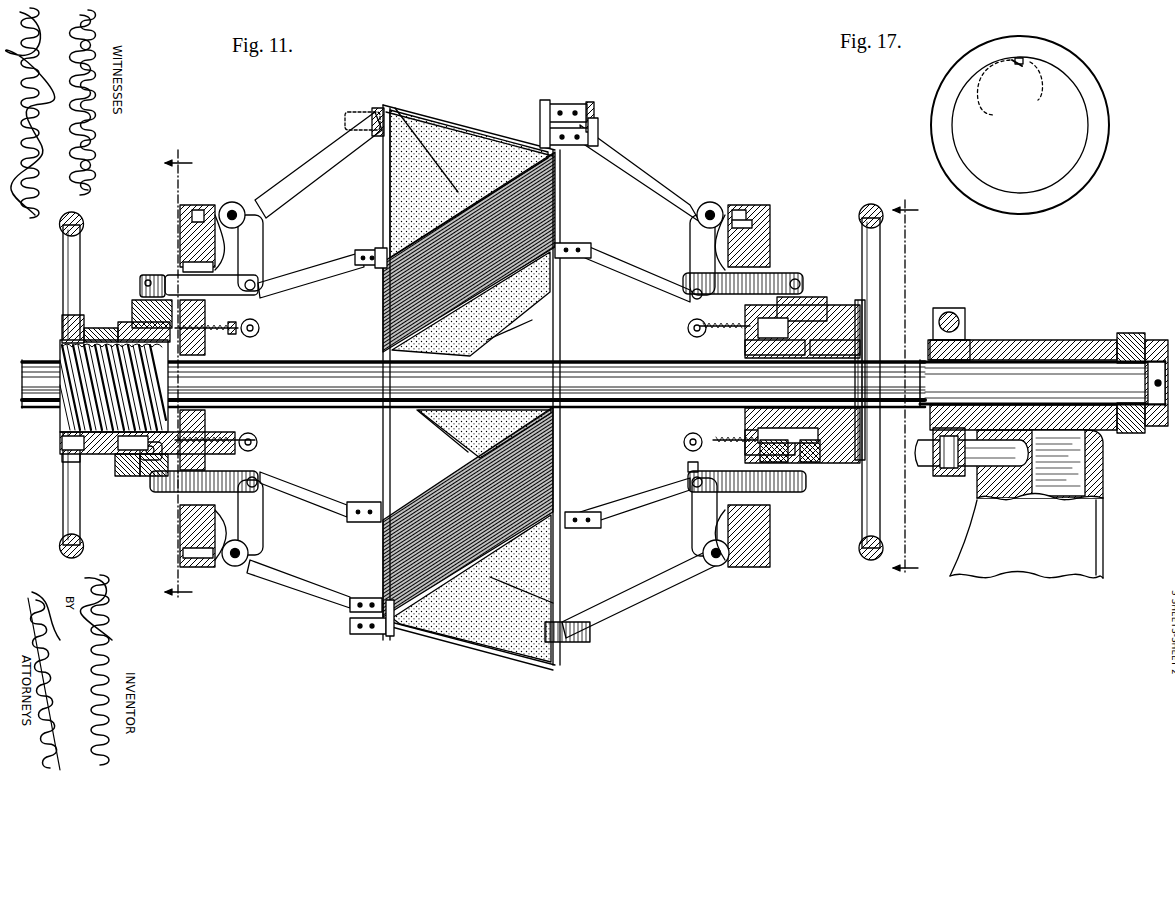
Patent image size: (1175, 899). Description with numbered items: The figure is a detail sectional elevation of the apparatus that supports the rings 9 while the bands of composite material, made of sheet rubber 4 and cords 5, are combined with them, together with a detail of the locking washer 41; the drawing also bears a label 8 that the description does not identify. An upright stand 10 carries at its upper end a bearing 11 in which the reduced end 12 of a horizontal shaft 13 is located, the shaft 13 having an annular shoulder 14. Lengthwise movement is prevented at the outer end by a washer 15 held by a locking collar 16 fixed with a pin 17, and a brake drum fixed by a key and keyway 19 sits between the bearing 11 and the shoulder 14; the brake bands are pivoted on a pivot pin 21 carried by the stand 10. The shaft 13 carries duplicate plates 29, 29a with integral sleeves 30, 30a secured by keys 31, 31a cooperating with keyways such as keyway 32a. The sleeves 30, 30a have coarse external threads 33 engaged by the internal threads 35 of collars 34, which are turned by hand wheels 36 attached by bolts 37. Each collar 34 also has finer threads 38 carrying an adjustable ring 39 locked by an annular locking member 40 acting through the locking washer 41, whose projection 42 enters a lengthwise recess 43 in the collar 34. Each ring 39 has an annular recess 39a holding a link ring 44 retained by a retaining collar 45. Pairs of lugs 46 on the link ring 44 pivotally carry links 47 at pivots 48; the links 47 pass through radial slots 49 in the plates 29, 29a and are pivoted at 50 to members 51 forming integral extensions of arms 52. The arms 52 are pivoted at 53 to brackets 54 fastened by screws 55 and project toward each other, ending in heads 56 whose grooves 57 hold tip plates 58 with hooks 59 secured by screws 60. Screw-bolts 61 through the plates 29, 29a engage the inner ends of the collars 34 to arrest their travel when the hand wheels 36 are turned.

In FIG. 11, the sheet rubber 4 is at (496, 344).
In FIG. 11, the cords 5 is at (500, 292).
In FIG. 11, the pin 8 is at (930, 414).
In FIG. 11, the rings 9 is at (560, 550).
In FIG. 11, the upright stand 10 is at (1083, 550).
In FIG. 11, the bearing 11 is at (1050, 340).
In FIG. 11, the reduced end 12 is at (1042, 383).
In FIG. 11, the shaft 13 is at (484, 66).
In FIG. 11, the annular shoulder 14 is at (922, 312).
In FIG. 11, the washer 15 is at (1125, 345).
In FIG. 11, the locking collar 16 is at (1160, 426).
In FIG. 11, the pin 17 is at (1128, 430).
In FIG. 11, the key and keyway 19 is at (965, 340).
In FIG. 11, the pivot pin 21 is at (975, 468).
In FIG. 11, the plate 29 is at (180, 242).
In FIG. 11, the plate 29a is at (770, 252).
In FIG. 11, the sleeve 30 is at (114, 386).
In FIG. 11, the sleeve 30a is at (870, 340).
In FIG. 11, the key 31 is at (205, 352).
In FIG. 11, the key 31a is at (860, 352).
In FIG. 11, the keyway 32a is at (740, 352).
In FIG. 11, the external screw-threads 33 is at (60, 428).
In FIG. 11, the collar 34 is at (110, 454).
In FIG. 17, the collar 34 is at (993, 90).
In FIG. 11, the internal screw-threads 35 is at (80, 470).
In FIG. 11, the hand wheel 36 is at (63, 500).
In FIG. 11, the bolts 37 is at (62, 440).
In FIG. 11, the external screw threads 38 is at (118, 470).
In FIG. 11, the ring 39 is at (145, 478).
In FIG. 11, the annular recess 39a is at (760, 478).
In FIG. 11, the locking member 40 is at (120, 312).
In FIG. 11, the locking washer 41 is at (120, 312).
In FIG. 17, the locking washer 41 is at (1060, 62).
In FIG. 17, the projection 42 is at (1020, 66).
In FIG. 17, the recess 43 is at (1045, 83).
In FIG. 11, the link ring 44 is at (158, 480).
In FIG. 11, the retaining collar 45 is at (180, 300).
In FIG. 11, the lugs 46 is at (142, 286).
In FIG. 11, the link 47 is at (478, 382).
In FIG. 11, the pivotal connection 48 is at (166, 278).
In FIG. 11, the slot 49 is at (180, 530).
In FIG. 11, the pivotal connection 50 is at (260, 328).
In FIG. 11, the member 51 is at (264, 254).
In FIG. 11, the arm 52 is at (295, 222).
In FIG. 11, the pivotal connection 53 is at (236, 565).
In FIG. 11, the bracket 54 is at (216, 212).
In FIG. 11, the screws 55 is at (765, 214).
In FIG. 11, the head 56 is at (365, 270).
In FIG. 11, the groove 57 is at (598, 132).
In FIG. 11, the tip plate 58 is at (546, 120).
In FIG. 11, the hook 59 is at (545, 104).
In FIG. 11, the screws 60 is at (592, 110).
In FIG. 11, the screw-bolt 61 is at (262, 440).